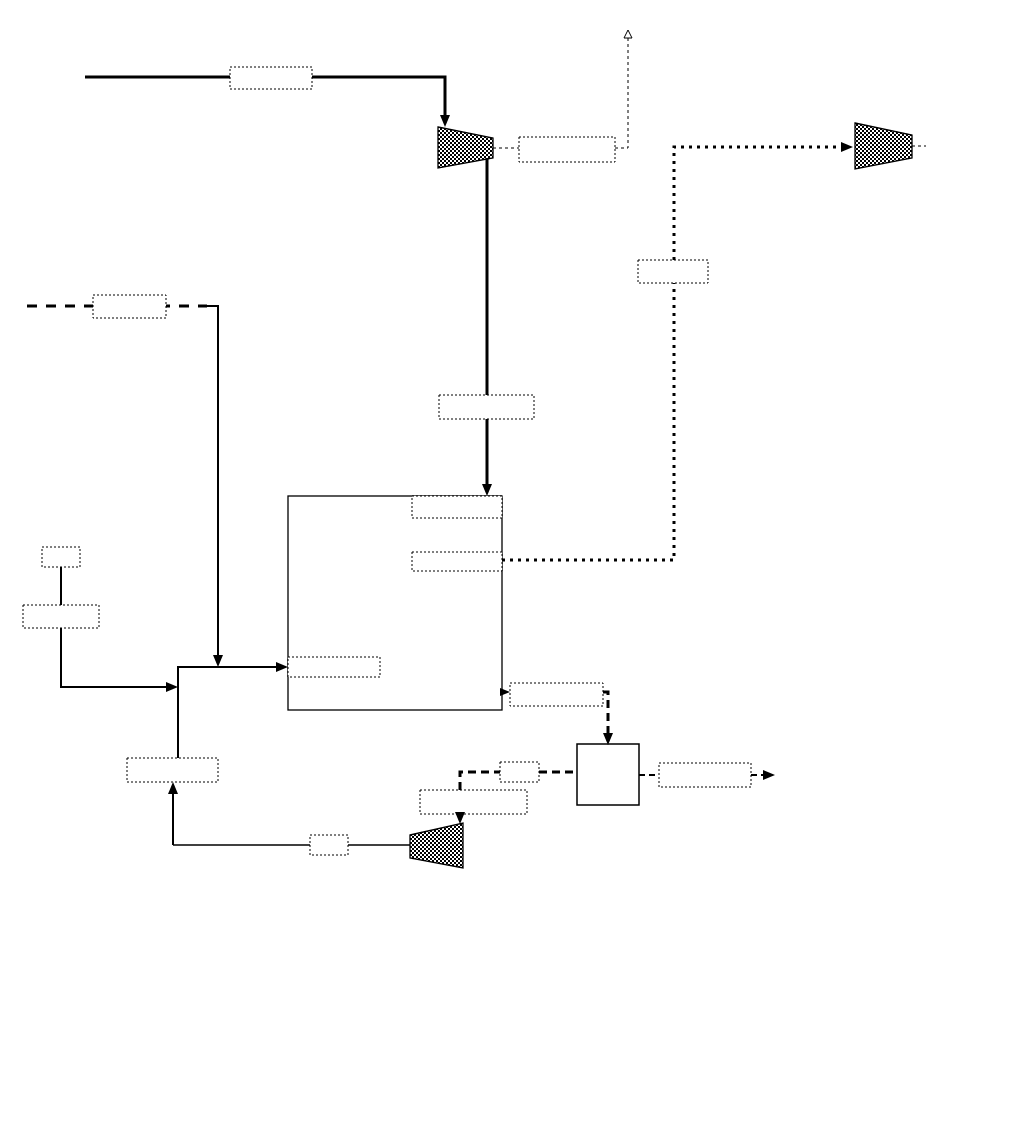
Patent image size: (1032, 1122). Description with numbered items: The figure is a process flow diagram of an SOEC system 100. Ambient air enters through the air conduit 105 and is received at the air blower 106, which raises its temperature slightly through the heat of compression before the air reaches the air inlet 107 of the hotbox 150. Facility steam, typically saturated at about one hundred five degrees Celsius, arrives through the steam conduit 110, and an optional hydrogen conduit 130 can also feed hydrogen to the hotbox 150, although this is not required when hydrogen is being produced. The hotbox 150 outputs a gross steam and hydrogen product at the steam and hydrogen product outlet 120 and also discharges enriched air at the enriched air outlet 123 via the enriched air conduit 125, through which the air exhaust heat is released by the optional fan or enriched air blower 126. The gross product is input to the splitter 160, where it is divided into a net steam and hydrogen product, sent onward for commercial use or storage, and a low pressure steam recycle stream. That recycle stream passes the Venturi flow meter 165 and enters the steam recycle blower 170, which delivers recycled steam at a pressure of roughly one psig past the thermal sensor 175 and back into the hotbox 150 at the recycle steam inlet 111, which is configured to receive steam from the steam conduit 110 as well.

The SOEC system 100 is at (463, 549).
The air conduit 105 is at (267, 87).
The air blower 106 is at (449, 147).
The air inlet 107 is at (457, 518).
The steam conduit 110 is at (125, 471).
The recycle steam inlet 111 is at (353, 668).
The steam and hydrogen product outlet 120 is at (506, 684).
The enriched air outlet 123 is at (457, 573).
The enriched air conduit 125 is at (677, 344).
The enriched air blower 126 is at (890, 138).
The optional hydrogen conduit 130 is at (100, 619).
The hotbox 150 is at (395, 603).
The splitter 160 is at (600, 786).
The Venturi flow meter 165 is at (518, 767).
The steam recycle blower 170 is at (441, 859).
The thermal sensor 175 is at (289, 818).